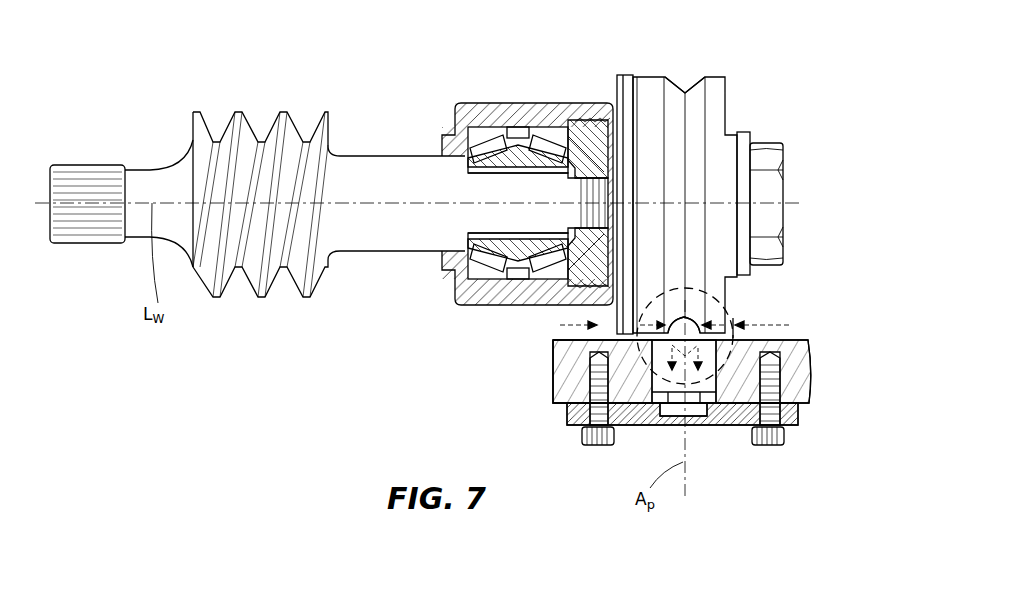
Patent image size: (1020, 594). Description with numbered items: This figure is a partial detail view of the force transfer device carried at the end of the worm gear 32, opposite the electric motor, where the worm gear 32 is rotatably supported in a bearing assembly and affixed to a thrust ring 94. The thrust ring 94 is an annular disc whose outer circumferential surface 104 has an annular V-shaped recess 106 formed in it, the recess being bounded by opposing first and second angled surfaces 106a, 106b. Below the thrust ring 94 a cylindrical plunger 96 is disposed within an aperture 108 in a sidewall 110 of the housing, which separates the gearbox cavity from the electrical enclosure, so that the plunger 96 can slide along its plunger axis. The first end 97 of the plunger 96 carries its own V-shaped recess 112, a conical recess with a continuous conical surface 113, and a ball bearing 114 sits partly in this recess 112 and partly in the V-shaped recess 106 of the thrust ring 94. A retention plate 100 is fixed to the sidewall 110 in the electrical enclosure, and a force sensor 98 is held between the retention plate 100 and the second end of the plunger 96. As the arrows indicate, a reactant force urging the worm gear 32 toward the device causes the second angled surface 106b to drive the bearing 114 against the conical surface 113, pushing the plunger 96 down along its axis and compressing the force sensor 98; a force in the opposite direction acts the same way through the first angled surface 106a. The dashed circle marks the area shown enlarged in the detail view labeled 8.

The worm gear 32 is at (373, 247).
The outer circumferential surface 104 is at (648, 75).
The V-shaped recess 106 is at (683, 77).
The first angled surface 106a is at (697, 100).
The second angled surface 106b is at (678, 133).
The thrust ring 94 is at (718, 80).
The detail view reference circle 8 is at (722, 300).
The aperture 108 is at (784, 343).
The first end 97 is at (600, 343).
The sidewall 110 is at (572, 388).
The plunger 96 is at (648, 385).
The force sensor 98 is at (697, 418).
The retention plate 100 is at (724, 428).
The ball bearing 114 is at (698, 322).
The conical surface 113 is at (618, 330).
The V-shaped recess 112 is at (740, 338).